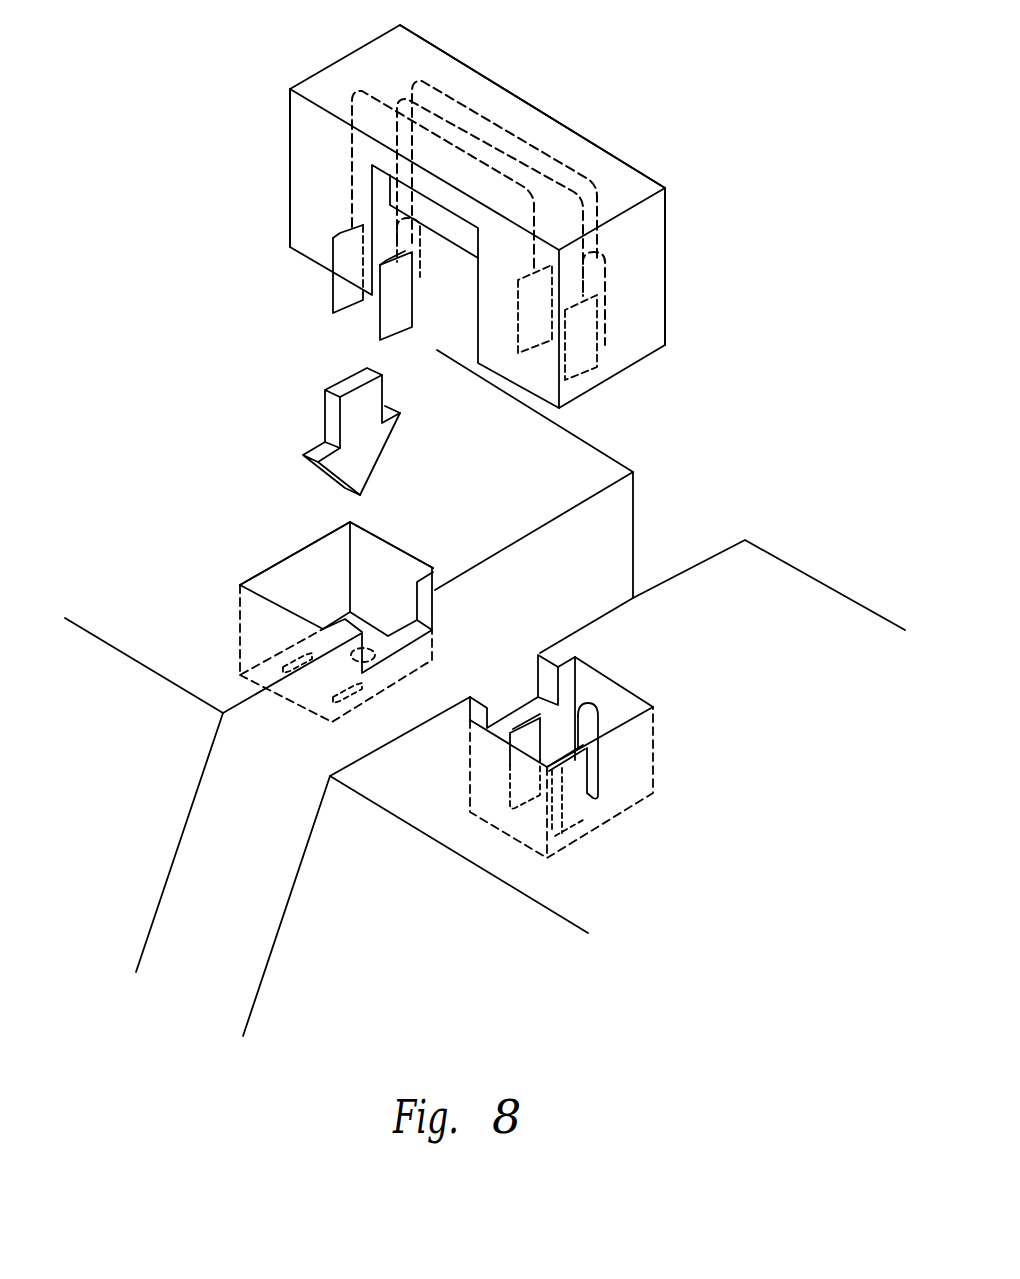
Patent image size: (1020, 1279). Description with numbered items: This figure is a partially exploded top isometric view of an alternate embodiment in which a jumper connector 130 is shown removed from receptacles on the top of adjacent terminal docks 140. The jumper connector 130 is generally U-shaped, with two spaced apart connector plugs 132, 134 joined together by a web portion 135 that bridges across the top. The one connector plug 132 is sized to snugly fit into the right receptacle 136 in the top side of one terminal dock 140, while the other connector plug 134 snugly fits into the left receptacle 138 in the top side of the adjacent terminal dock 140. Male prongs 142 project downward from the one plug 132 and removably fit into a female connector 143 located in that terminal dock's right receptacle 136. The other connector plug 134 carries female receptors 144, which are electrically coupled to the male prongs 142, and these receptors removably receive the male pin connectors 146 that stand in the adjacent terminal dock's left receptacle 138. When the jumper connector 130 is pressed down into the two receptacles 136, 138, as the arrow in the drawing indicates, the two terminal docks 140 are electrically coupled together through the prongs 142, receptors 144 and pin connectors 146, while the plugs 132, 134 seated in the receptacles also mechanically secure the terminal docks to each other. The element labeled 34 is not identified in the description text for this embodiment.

The jumper connector 130 is at (572, 92).
The connector plug 132 is at (300, 213).
The connector plug 134 is at (648, 277).
The web portion 135 is at (468, 70).
The right receptacle 136 is at (270, 580).
The left receptacle 138 is at (625, 705).
The terminal dock 140 is at (610, 508).
The male prongs 142 is at (333, 297).
The female connector 143 is at (340, 700).
The female receptors 144 is at (600, 342).
The male pin connectors 146 is at (590, 710).
The circuit board 34 is at (392, 560).